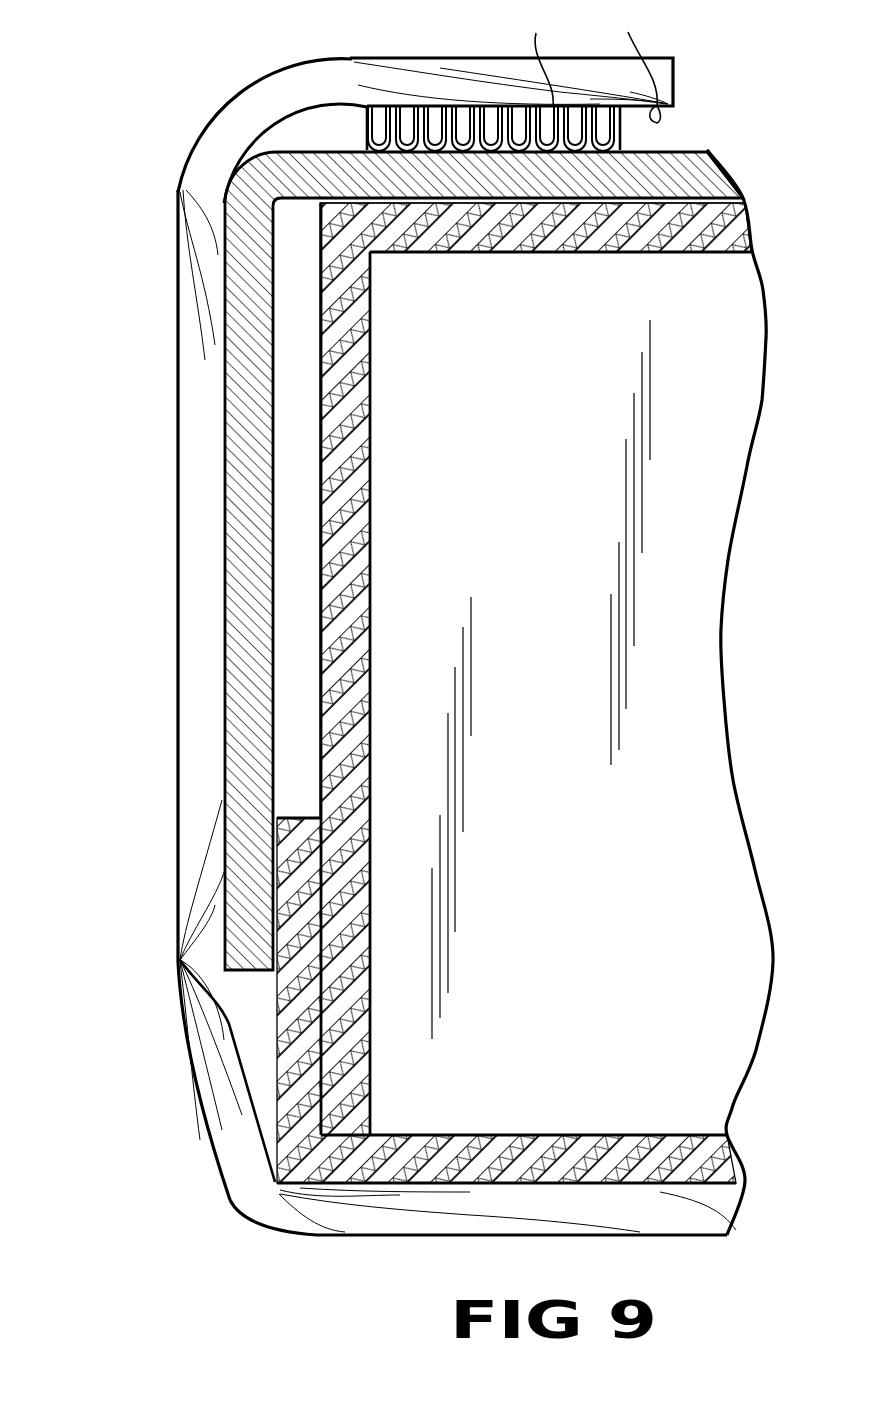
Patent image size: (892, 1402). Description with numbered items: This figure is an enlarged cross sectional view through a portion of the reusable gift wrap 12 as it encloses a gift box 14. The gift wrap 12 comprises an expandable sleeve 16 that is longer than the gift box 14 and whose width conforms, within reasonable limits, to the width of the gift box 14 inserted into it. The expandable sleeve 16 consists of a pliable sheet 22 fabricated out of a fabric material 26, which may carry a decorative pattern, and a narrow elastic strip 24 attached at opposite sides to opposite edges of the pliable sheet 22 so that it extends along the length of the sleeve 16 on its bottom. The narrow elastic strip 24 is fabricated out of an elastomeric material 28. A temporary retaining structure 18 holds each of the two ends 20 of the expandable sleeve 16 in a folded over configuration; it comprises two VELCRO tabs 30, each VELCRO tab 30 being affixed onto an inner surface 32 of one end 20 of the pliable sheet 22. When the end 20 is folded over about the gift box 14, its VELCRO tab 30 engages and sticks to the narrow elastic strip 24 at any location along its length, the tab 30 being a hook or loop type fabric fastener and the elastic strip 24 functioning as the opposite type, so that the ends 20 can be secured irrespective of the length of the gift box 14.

The reusable gift wrap 12 is at (140, 563).
The gift box 14 is at (370, 463).
The expandable sleeve 16 is at (175, 889).
The temporary retaining structure 18 is at (634, 130).
The end 20 is at (677, 83).
The pliable sheet 22 is at (238, 1172).
The narrow elastic strip 24 is at (722, 182).
The fabric material 26 is at (217, 1091).
The elastomeric material 28 is at (715, 172).
The VELCRO tab 30 is at (539, 53).
The inner surface 32 is at (638, 61).